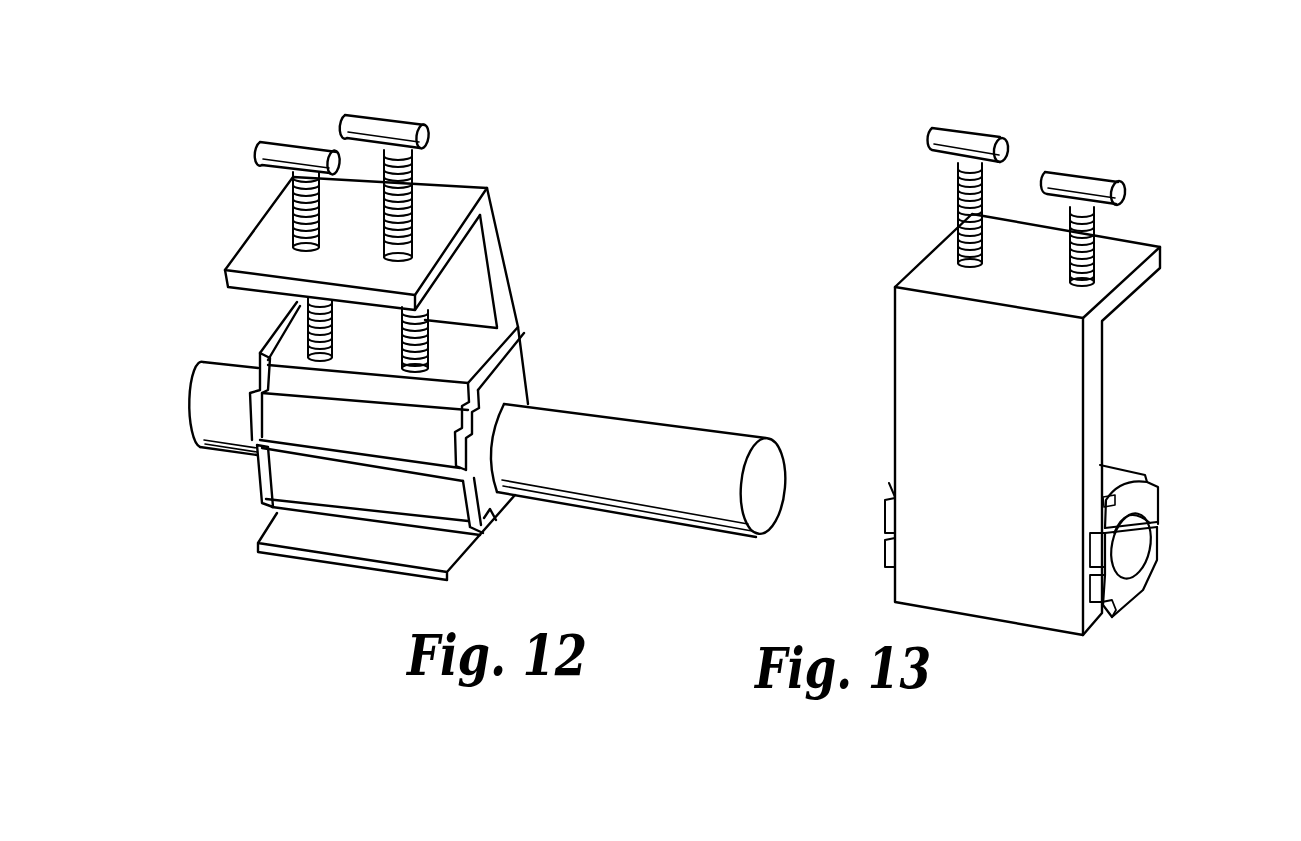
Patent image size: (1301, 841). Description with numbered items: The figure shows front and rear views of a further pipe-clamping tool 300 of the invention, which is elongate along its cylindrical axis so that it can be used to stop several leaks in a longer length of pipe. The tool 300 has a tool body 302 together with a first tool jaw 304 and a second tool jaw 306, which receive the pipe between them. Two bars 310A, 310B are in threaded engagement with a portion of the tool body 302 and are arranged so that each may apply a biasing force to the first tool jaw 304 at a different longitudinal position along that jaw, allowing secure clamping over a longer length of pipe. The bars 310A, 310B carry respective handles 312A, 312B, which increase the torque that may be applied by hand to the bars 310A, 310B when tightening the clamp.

In FIG. 12, the pipe-clamping tool 300 is at (535, 240).
In FIG. 13, the pipe-clamping tool 300 is at (1165, 177).
In FIG. 12, the tool body 302 is at (477, 305).
In FIG. 13, the tool body 302 is at (910, 422).
In FIG. 12, the first tool jaw 304 is at (272, 425).
In FIG. 13, the first tool jaw 304 is at (1142, 490).
In FIG. 12, the second tool jaw 306 is at (313, 479).
In FIG. 13, the second tool jaw 306 is at (1143, 565).
In FIG. 12, the bar 310A is at (293, 198).
In FIG. 13, the bar 310A is at (1087, 245).
In FIG. 12, the bar 310B is at (402, 187).
In FIG. 13, the bar 310B is at (958, 203).
In FIG. 12, the handle 312A is at (265, 140).
In FIG. 13, the handle 312A is at (1068, 180).
In FIG. 12, the handle 312B is at (410, 127).
In FIG. 13, the handle 312B is at (947, 132).